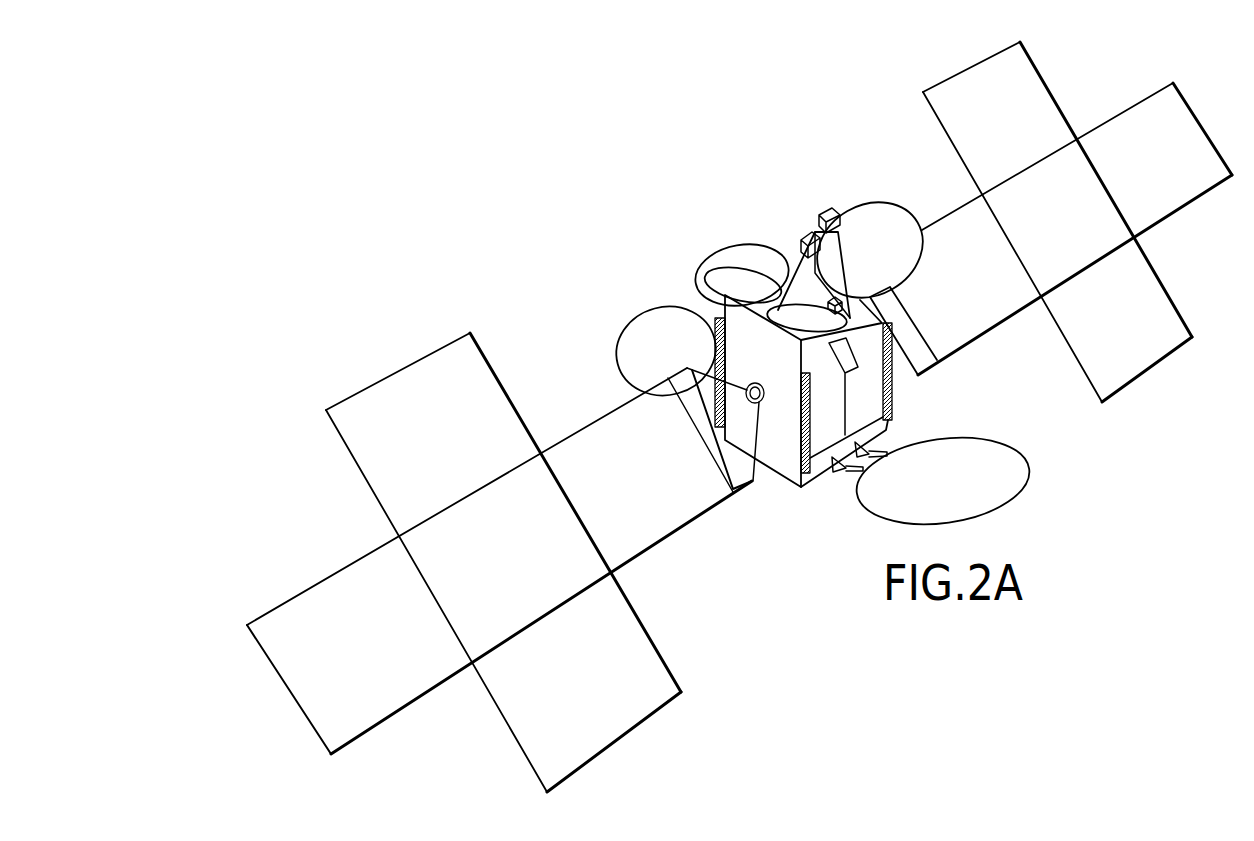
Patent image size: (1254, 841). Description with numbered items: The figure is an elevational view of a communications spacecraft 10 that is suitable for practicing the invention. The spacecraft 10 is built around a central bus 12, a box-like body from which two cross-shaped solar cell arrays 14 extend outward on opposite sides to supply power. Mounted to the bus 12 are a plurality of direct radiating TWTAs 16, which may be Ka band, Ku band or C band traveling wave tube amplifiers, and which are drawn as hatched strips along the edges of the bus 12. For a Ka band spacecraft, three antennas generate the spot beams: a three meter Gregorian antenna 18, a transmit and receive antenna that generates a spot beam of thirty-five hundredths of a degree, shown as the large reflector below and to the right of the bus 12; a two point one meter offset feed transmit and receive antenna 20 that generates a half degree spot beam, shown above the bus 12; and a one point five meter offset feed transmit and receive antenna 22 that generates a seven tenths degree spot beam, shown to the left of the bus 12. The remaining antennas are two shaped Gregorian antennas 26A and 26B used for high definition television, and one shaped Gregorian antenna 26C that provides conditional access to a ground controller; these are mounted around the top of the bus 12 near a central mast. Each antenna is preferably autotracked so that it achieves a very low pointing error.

The spacecraft 10 is at (1122, 507).
The bus 12 is at (790, 472).
The solar cell arrays 14 is at (360, 739).
The direct radiating TWTAs 16 is at (893, 392).
The Gregorian antenna 18 is at (1003, 502).
The offset feed TX/RCV antenna 20 is at (744, 245).
The offset feed TX/RCV antenna 22 is at (646, 308).
The shaped Gregorian antenna 26A is at (890, 206).
The shaped Gregorian antenna 26B is at (831, 337).
The shaped Gregorian antenna 26C is at (710, 265).